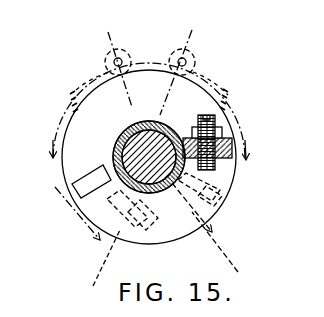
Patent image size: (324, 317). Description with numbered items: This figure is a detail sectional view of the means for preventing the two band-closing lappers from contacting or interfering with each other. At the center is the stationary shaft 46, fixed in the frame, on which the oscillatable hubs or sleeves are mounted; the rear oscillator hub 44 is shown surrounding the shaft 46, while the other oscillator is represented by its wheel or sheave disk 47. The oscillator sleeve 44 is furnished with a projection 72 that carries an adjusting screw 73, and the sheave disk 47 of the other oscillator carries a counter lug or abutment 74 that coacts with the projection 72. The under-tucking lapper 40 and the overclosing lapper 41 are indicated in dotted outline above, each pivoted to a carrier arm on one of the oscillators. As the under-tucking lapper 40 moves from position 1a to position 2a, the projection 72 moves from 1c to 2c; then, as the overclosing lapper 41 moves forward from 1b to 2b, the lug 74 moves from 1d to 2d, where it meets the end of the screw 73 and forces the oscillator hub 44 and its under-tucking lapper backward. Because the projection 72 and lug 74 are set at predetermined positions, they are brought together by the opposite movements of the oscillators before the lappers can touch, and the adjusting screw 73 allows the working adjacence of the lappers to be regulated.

The sheave disk 47 is at (149, 157).
The initial position of lug 72 1c is at (250, 159).
The overclosing lapper 41 is at (105, 62).
The under-tucking lapper 40 is at (196, 61).
The initial position of lapper 41 1b is at (115, 58).
The initial position of lapper 40 1a is at (181, 62).
The oscillator hub 44 is at (122, 141).
The stationary shaft 46 is at (149, 157).
The projection 72 is at (226, 151).
The adjusting screw 73 is at (212, 126).
The counter lug 74 is at (92, 181).
The initial position of lug 74 1d is at (65, 213).
The advanced position of lapper 41 2b is at (112, 222).
The advanced position of lug 72 2c is at (96, 267).
The advanced position of lug 74 2d is at (218, 192).
The advanced position of lapper 40 2a is at (215, 232).